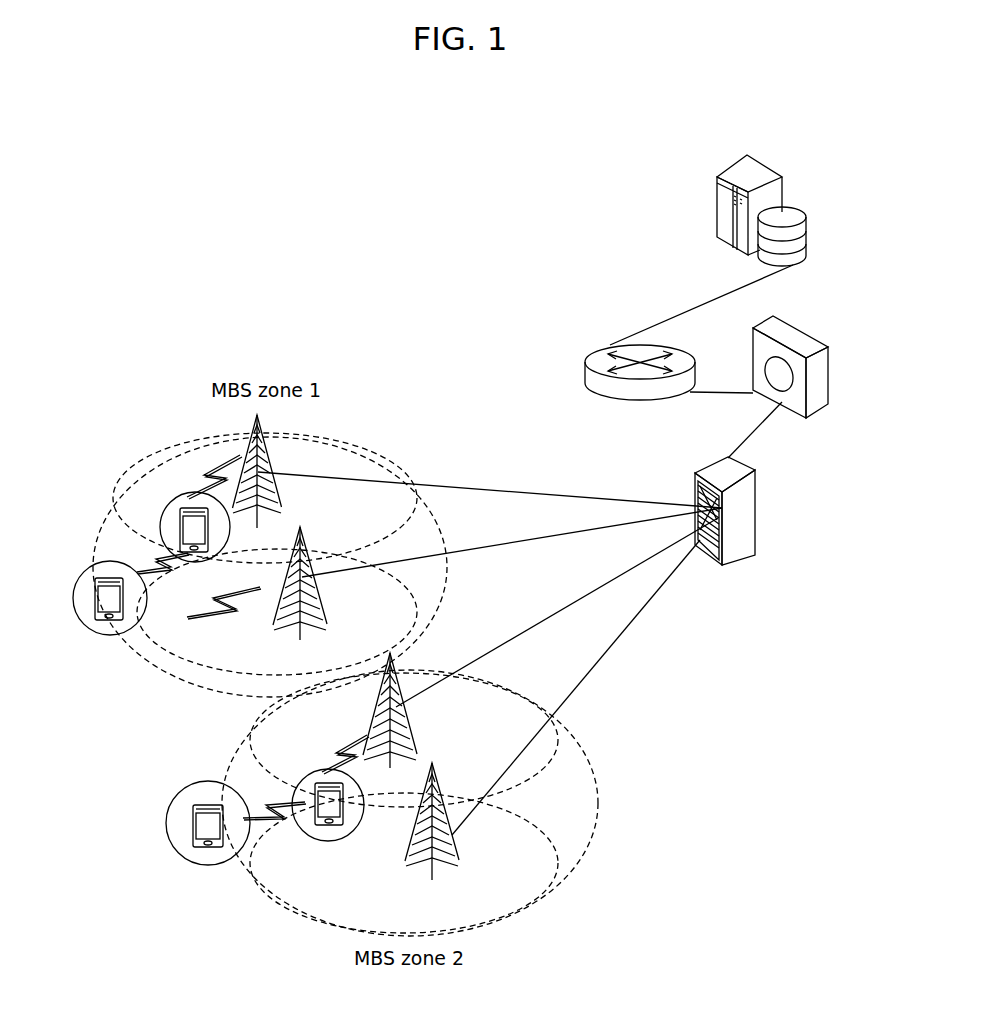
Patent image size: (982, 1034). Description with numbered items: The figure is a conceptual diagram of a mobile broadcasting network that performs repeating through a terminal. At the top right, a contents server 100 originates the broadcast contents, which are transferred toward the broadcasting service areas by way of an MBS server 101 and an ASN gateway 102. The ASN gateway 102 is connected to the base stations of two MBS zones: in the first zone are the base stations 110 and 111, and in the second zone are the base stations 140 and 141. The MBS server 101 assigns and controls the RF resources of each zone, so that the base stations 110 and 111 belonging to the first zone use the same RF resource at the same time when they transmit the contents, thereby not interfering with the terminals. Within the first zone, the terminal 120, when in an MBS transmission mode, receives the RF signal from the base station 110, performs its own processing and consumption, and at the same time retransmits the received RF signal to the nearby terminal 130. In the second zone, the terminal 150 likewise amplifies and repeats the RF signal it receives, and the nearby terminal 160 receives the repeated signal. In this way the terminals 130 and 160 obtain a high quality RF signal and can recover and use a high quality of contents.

The contents server 100 is at (752, 163).
The MBS server 101 is at (792, 333).
The ASN gateway 102 is at (755, 508).
The base station 110 is at (288, 499).
The base station 111 is at (326, 611).
The terminal 120 is at (187, 507).
The terminal 130 is at (97, 579).
The base station 140 is at (412, 744).
The base station 141 is at (448, 857).
The terminal 150 is at (315, 783).
The terminal 160 is at (192, 808).